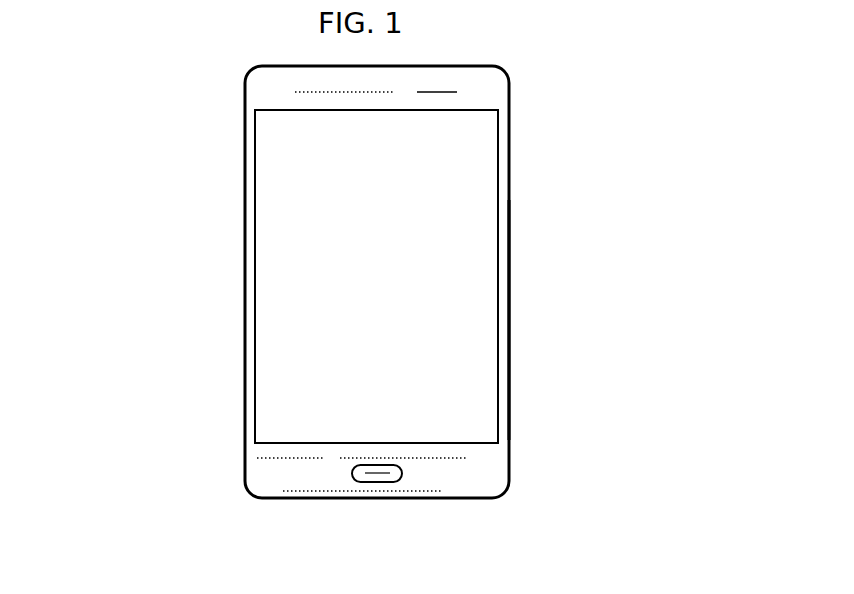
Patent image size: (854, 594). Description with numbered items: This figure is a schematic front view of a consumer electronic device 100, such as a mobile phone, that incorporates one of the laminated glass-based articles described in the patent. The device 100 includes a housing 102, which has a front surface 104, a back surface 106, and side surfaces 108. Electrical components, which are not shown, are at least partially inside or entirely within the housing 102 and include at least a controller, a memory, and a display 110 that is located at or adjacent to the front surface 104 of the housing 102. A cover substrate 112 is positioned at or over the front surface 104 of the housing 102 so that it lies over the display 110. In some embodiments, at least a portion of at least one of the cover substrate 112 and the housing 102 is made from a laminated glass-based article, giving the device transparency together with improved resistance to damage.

The consumer electronic device 100 is at (535, 117).
The housing 102 is at (268, 91).
The front surface 104 is at (482, 475).
The back surface 106 is at (282, 230).
The side surfaces 108 is at (510, 320).
The display 110 is at (447, 235).
The cover substrate 112 is at (290, 342).